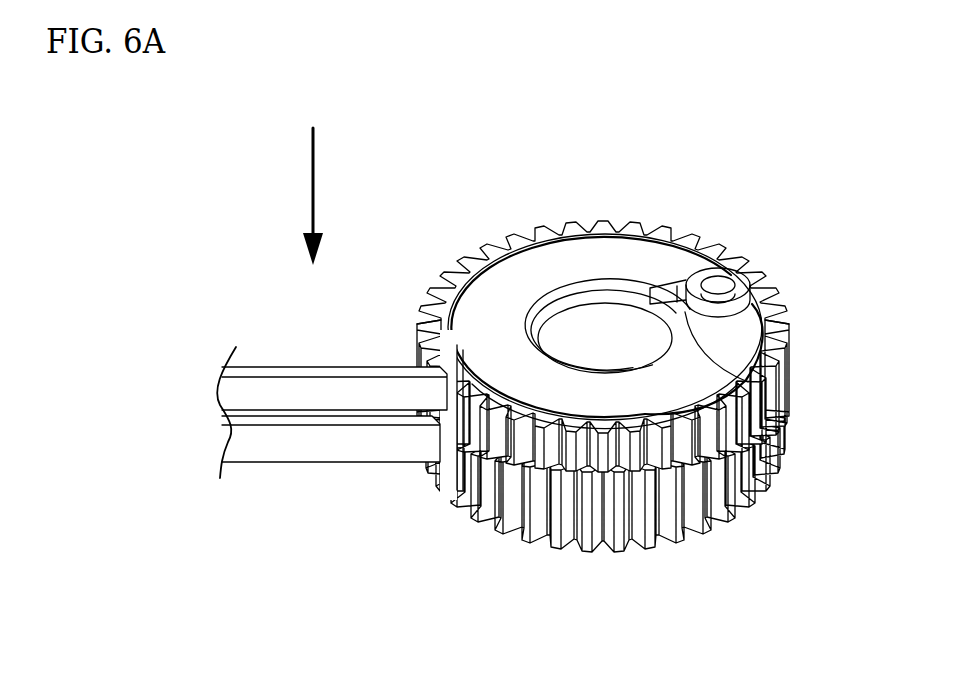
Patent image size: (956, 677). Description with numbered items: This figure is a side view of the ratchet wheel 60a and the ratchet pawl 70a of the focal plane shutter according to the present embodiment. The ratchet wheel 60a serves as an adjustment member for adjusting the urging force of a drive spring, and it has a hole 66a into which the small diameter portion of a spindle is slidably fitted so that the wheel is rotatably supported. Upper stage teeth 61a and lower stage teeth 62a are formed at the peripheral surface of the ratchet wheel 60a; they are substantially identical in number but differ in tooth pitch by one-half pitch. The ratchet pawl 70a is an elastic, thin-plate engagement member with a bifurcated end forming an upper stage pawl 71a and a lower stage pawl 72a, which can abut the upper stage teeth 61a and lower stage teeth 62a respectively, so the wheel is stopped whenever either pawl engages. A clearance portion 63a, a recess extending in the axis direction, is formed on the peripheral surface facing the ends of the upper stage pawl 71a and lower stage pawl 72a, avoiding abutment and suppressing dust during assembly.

The ratchet wheel 60a is at (608, 387).
The upper stage teeth 61a is at (730, 430).
The lower stage teeth 62a is at (670, 520).
The clearance portion 63a is at (455, 452).
The hole 66a is at (607, 308).
The ratchet pawl 70a is at (327, 417).
The upper stage pawl 71a is at (345, 388).
The lower stage pawl 72a is at (352, 452).